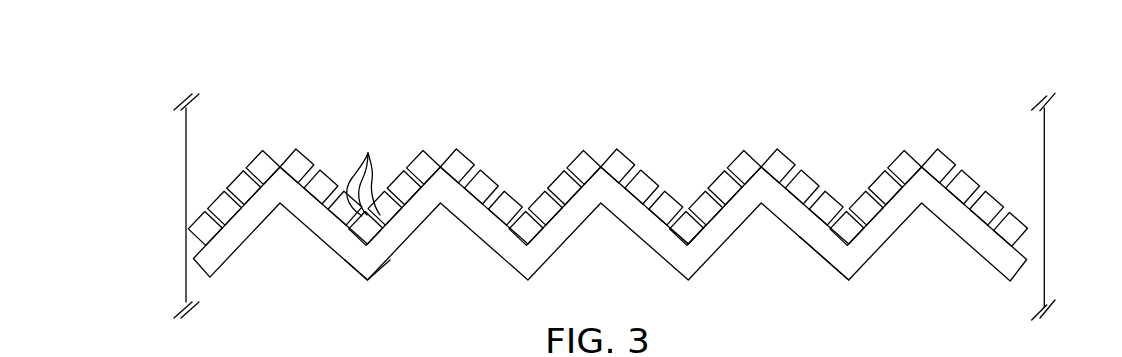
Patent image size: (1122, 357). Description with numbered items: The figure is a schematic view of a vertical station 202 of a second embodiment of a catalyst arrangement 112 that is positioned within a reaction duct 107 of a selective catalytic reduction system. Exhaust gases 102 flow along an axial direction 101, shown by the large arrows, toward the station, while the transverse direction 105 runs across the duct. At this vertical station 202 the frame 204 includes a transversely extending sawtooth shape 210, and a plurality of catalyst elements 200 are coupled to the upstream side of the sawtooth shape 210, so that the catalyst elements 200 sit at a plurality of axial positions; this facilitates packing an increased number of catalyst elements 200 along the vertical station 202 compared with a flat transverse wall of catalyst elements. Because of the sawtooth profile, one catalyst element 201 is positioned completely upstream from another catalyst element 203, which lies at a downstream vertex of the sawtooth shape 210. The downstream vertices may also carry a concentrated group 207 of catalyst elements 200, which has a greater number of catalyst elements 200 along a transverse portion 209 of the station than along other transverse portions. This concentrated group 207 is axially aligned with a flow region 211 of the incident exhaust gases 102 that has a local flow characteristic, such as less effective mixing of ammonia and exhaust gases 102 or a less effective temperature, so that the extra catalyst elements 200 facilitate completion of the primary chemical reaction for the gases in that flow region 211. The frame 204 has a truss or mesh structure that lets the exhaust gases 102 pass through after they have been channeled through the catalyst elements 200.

The axial direction 101 is at (599, 142).
The exhaust gases 102 is at (762, 100).
The transverse direction 105 is at (627, 257).
The reaction duct 107 is at (186, 162).
The catalyst arrangement 112 is at (898, 53).
The catalyst elements 200 is at (847, 203).
The catalyst element 201 is at (620, 155).
The vertical station 202 is at (930, 85).
The catalyst element 203 is at (686, 212).
The frame 204 is at (878, 252).
The concentrated group 207 is at (361, 169).
The transverse portion 209 is at (395, 292).
The sawtooth shape 210 is at (823, 258).
The flow region 211 is at (368, 100).